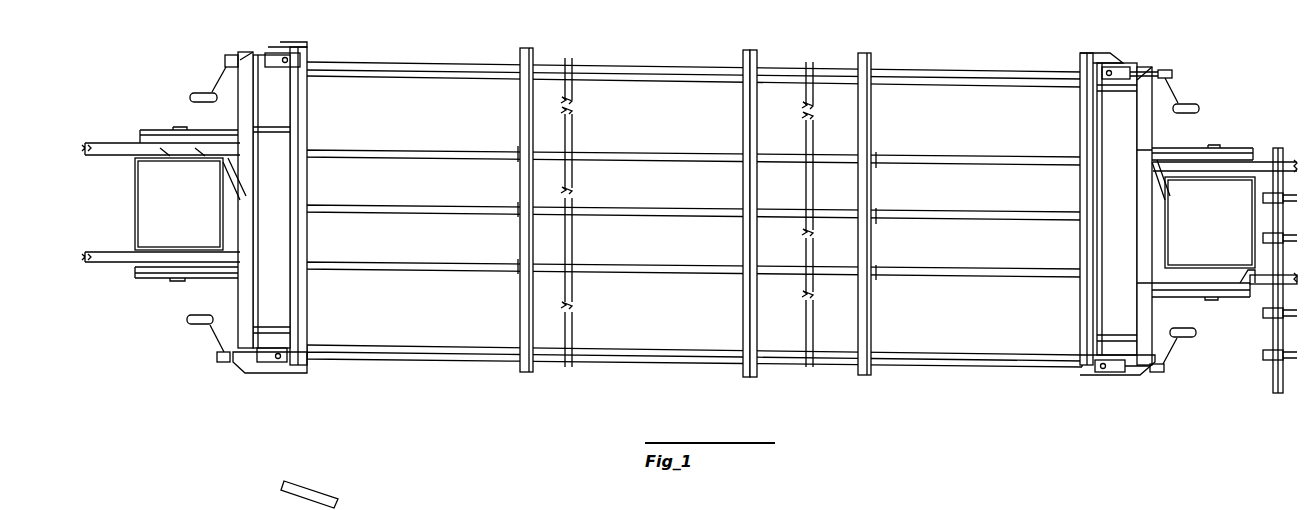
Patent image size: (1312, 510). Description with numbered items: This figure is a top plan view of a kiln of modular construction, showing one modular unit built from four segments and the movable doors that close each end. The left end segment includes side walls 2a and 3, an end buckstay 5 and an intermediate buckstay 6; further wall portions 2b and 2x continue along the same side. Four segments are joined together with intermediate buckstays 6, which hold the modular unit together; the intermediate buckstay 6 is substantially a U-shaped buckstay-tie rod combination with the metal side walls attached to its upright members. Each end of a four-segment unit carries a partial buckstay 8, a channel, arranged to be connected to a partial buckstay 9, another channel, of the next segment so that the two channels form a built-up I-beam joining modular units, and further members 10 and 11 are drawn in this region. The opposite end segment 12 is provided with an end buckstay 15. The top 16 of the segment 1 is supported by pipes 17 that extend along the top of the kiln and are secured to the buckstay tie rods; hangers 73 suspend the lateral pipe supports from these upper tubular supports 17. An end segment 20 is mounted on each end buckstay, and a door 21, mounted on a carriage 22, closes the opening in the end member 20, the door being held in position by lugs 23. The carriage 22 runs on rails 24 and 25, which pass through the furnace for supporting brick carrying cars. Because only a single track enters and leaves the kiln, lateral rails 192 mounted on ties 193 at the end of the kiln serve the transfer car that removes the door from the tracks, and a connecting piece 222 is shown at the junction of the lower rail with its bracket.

The segment 1 is at (366, 335).
The side wall 2a is at (397, 356).
The lower beam section 2b is at (545, 353).
The lower beam section 2x is at (626, 356).
The side wall 3 is at (430, 63).
The end buckstay 5 is at (304, 369).
The intermediate buckstay 6 is at (534, 52).
The partial buckstay 8 is at (752, 54).
The partial buckstay 9 is at (759, 55).
The tie rod 10 is at (777, 92).
The tie rod 11 is at (832, 335).
The opposite end segment 12 is at (950, 341).
The end buckstay 15 is at (1101, 55).
The top 16 is at (402, 248).
The pipes 17 is at (422, 206).
The end segment 20 is at (277, 316).
The door 21 is at (246, 298).
The carriage 22 is at (168, 276).
The lugs 23 is at (212, 55).
The rail 24 is at (121, 263).
The rail 25 is at (122, 142).
The hangers 73 is at (521, 150).
The lateral rails 192 is at (1271, 390).
The ties 193 is at (1268, 320).
The connecting piece 222 is at (1245, 280).